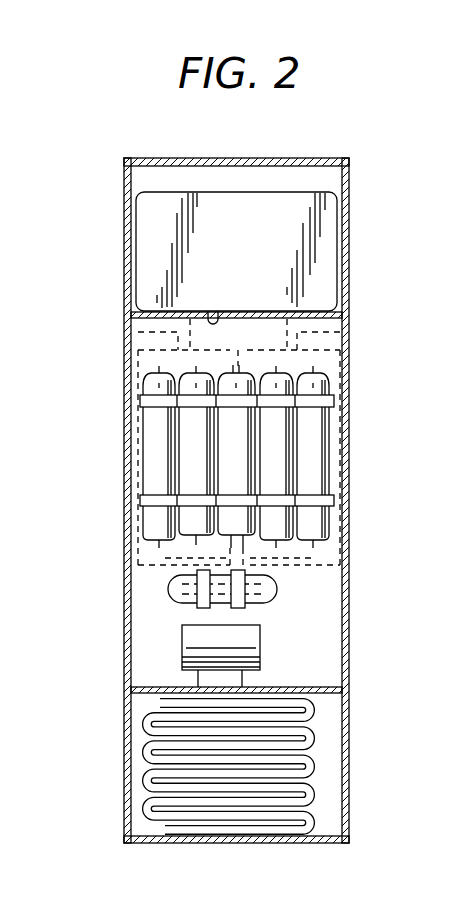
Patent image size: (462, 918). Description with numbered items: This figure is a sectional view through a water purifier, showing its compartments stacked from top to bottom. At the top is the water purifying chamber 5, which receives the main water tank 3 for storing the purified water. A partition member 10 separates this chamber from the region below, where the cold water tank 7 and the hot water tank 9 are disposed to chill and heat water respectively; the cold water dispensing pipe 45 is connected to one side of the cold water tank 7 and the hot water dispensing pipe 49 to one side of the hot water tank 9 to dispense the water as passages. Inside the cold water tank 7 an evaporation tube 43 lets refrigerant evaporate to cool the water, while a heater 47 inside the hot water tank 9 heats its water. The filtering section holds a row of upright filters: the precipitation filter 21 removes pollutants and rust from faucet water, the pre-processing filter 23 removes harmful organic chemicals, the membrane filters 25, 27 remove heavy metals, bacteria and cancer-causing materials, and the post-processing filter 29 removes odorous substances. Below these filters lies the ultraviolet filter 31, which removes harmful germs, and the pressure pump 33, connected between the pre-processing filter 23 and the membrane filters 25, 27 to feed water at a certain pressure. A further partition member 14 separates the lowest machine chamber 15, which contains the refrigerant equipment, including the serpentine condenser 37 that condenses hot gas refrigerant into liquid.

The water purifying chamber 5 is at (340, 183).
The main water tank 3 is at (325, 262).
The partition member 10 is at (208, 311).
The hot water dispensing pipe 49 is at (138, 332).
The cold water dispensing pipe 45 is at (342, 327).
The hot water tank 9 is at (122, 348).
The cold water tank 7 is at (336, 346).
The post-processing filter 29 is at (157, 466).
The membrane filter 27 is at (185, 427).
The membrane filter 25 is at (255, 432).
The pre-processing filter 23 is at (280, 472).
The precipitation filter 21 is at (313, 517).
The heater 47 is at (166, 558).
The evaporation tube 43 is at (313, 558).
The ultraviolet filter 31 is at (278, 590).
The pressure pump 33 is at (243, 641).
The partition member 14 is at (330, 688).
The machine chamber 15 is at (325, 760).
The condenser 37 is at (181, 836).